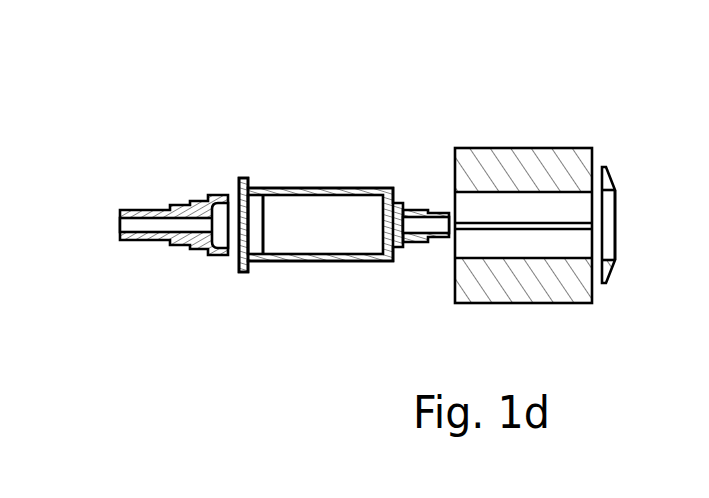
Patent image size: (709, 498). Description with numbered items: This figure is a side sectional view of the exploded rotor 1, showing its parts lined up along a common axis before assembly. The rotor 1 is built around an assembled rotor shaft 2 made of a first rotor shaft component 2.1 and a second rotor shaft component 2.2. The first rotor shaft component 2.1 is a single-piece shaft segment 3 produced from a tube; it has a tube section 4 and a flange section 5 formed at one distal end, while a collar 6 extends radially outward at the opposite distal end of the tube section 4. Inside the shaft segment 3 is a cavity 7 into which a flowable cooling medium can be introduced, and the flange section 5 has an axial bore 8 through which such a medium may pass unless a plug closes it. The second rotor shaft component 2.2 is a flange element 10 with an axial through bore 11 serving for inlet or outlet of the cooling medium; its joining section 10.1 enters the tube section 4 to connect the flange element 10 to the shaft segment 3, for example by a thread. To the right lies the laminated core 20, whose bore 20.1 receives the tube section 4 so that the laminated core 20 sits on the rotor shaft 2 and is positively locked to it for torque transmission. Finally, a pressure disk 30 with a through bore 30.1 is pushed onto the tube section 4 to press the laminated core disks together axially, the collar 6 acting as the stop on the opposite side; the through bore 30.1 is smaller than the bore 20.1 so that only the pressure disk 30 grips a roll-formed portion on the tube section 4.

The rotor 1 is at (343, 175).
The rotor shaft 2 is at (343, 210).
The first rotor shaft component 2.1 is at (344, 160).
The second rotor shaft component 2.2 is at (182, 217).
The shaft segment 3 is at (343, 210).
The tube section 4 is at (365, 262).
The flange section 5 is at (426, 227).
The collar 6 is at (242, 275).
The cavity 7 is at (304, 244).
The bore 8 is at (413, 237).
The flange element 10 is at (173, 207).
The joining section 10.1 is at (220, 181).
The bore 11 is at (146, 232).
The laminated core 20 is at (501, 212).
The bore 20.1 is at (458, 251).
The pressure disk 30 is at (655, 201).
The through bore 30.1 is at (619, 239).